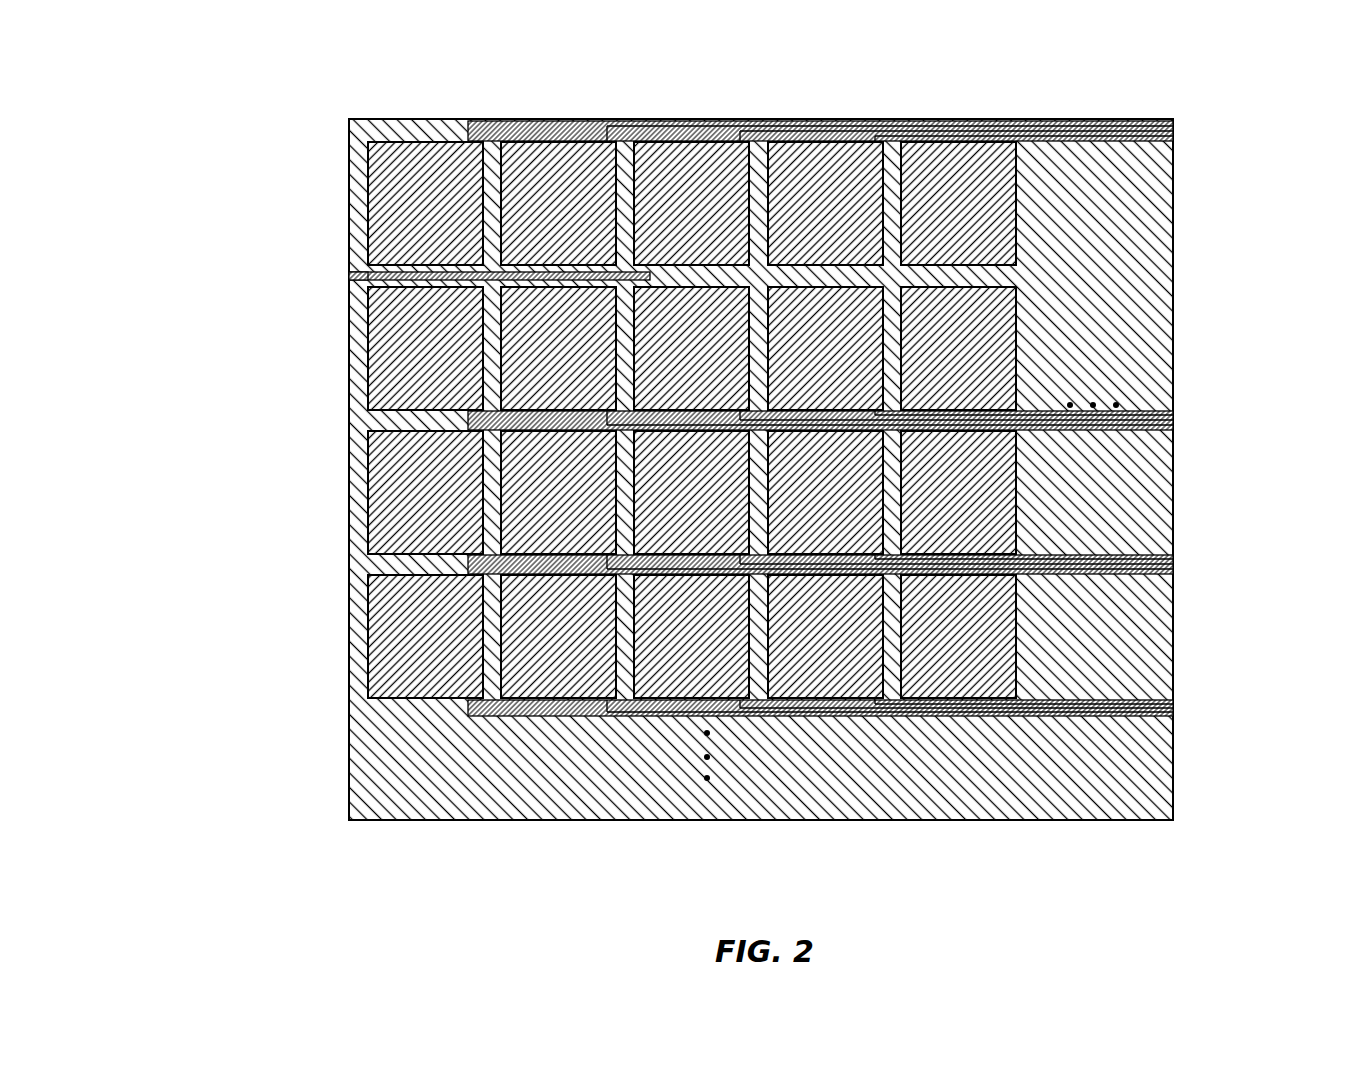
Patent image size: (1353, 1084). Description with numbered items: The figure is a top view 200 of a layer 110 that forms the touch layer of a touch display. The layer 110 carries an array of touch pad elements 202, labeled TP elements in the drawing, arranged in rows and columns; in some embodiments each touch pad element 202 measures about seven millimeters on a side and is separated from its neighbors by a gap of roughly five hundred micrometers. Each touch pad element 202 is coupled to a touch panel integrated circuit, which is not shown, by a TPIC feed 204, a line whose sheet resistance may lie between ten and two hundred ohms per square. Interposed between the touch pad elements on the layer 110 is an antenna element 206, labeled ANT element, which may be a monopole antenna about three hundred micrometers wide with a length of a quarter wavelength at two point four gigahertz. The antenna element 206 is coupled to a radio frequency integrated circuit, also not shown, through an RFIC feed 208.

The top view 200 is at (698, 431).
The layer 110 is at (345, 116).
The touch pad element 202 is at (997, 512).
The TPIC feed 204 is at (1178, 561).
The antenna element 206 is at (348, 275).
The RFIC feed 208 is at (345, 276).